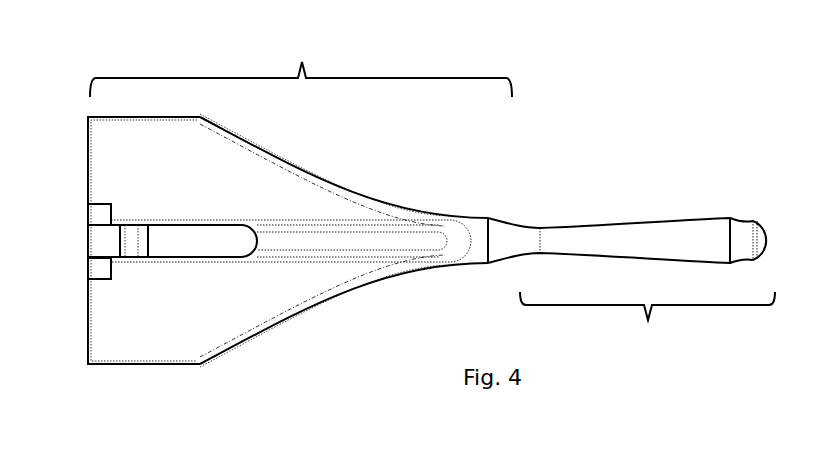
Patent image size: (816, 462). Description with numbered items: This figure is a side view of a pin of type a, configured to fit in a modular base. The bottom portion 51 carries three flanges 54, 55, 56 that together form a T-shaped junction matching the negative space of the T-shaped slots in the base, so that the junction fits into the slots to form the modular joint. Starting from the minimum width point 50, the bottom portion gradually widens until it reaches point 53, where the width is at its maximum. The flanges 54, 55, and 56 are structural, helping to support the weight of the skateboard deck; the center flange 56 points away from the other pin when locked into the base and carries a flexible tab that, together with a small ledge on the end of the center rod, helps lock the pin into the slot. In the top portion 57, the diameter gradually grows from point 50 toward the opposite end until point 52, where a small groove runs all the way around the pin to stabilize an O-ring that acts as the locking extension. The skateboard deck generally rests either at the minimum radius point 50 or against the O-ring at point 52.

The minimum width point 50 is at (530, 220).
The bottom portion 51 is at (301, 61).
The groove point 52 is at (758, 212).
The maximum width point 53 is at (193, 373).
The flange 54 is at (86, 147).
The flange 55 is at (98, 368).
The center flange 56 is at (100, 240).
The top portion 57 is at (647, 328).